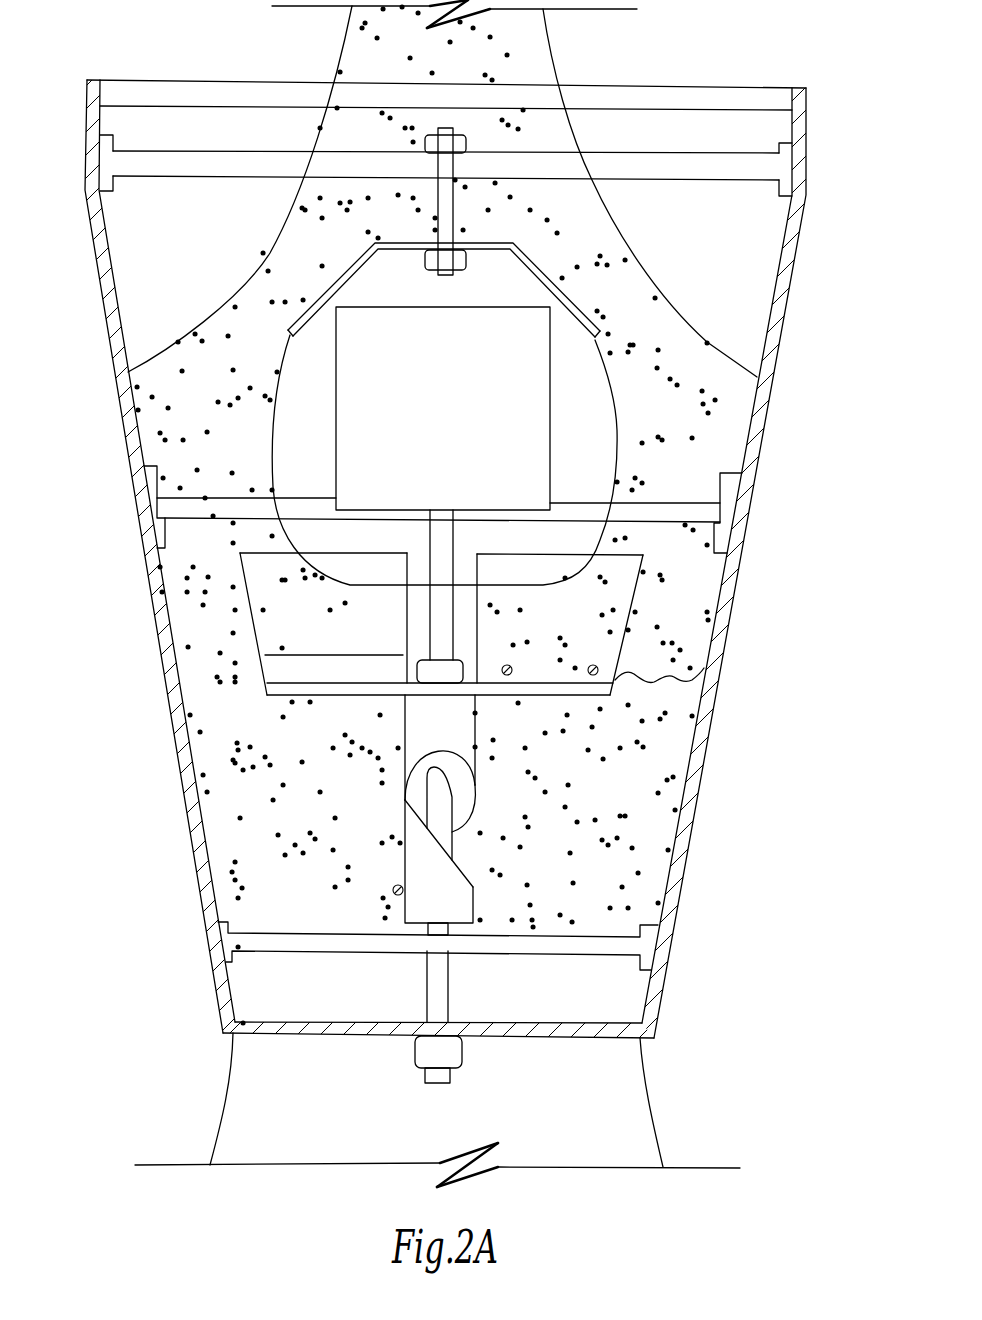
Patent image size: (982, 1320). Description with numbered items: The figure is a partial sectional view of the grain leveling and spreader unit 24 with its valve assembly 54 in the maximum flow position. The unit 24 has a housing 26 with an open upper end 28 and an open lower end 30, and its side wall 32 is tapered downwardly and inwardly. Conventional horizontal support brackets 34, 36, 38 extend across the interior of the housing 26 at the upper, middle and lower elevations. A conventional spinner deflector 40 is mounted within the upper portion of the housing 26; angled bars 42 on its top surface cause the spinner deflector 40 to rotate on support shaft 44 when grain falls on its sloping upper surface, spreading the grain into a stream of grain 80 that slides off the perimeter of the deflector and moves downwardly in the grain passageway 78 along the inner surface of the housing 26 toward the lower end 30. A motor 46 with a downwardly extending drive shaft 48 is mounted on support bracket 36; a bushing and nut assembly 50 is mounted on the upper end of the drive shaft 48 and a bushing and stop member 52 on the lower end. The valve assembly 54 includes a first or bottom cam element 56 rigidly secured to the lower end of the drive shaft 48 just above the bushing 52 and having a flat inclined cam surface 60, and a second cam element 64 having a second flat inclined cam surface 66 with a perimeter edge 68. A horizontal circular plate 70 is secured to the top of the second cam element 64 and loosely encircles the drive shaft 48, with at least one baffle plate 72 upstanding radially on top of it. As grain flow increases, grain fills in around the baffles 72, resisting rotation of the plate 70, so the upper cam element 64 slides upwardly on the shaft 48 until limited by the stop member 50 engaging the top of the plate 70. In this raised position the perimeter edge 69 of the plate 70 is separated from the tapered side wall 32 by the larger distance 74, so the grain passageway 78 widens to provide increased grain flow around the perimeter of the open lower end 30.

The grain leveling and spreader unit 24 is at (491, 560).
The housing 26 is at (776, 369).
The open upper end 28 is at (720, 87).
The open lower end 30 is at (616, 1022).
The side wall 32 is at (745, 548).
The support bracket 34 is at (752, 153).
The support bracket 36 is at (704, 511).
The support bracket 38 is at (628, 933).
The spinner deflector 40 is at (437, 278).
The angled bars 42 is at (327, 282).
The support shaft 44 is at (433, 238).
The motor 46 is at (458, 418).
The drive shaft 48 is at (430, 541).
The bushing and nut assembly 50 is at (461, 660).
The bushing and stop member 52 is at (418, 1069).
The valve assembly 54 is at (366, 624).
The first or bottom cam element 56 is at (441, 867).
The cam surface 60 is at (458, 864).
The second cam element 64 is at (468, 725).
The second cam surface 66 is at (462, 808).
The perimeter edge 68 is at (474, 783).
The perimeter edge 69 is at (350, 688).
The horizontal circular plate 70 is at (370, 723).
The baffle plate 72 is at (316, 625).
The distance 74 is at (700, 668).
The grain passageway 78 is at (207, 538).
The stream of grain 80 is at (647, 745).